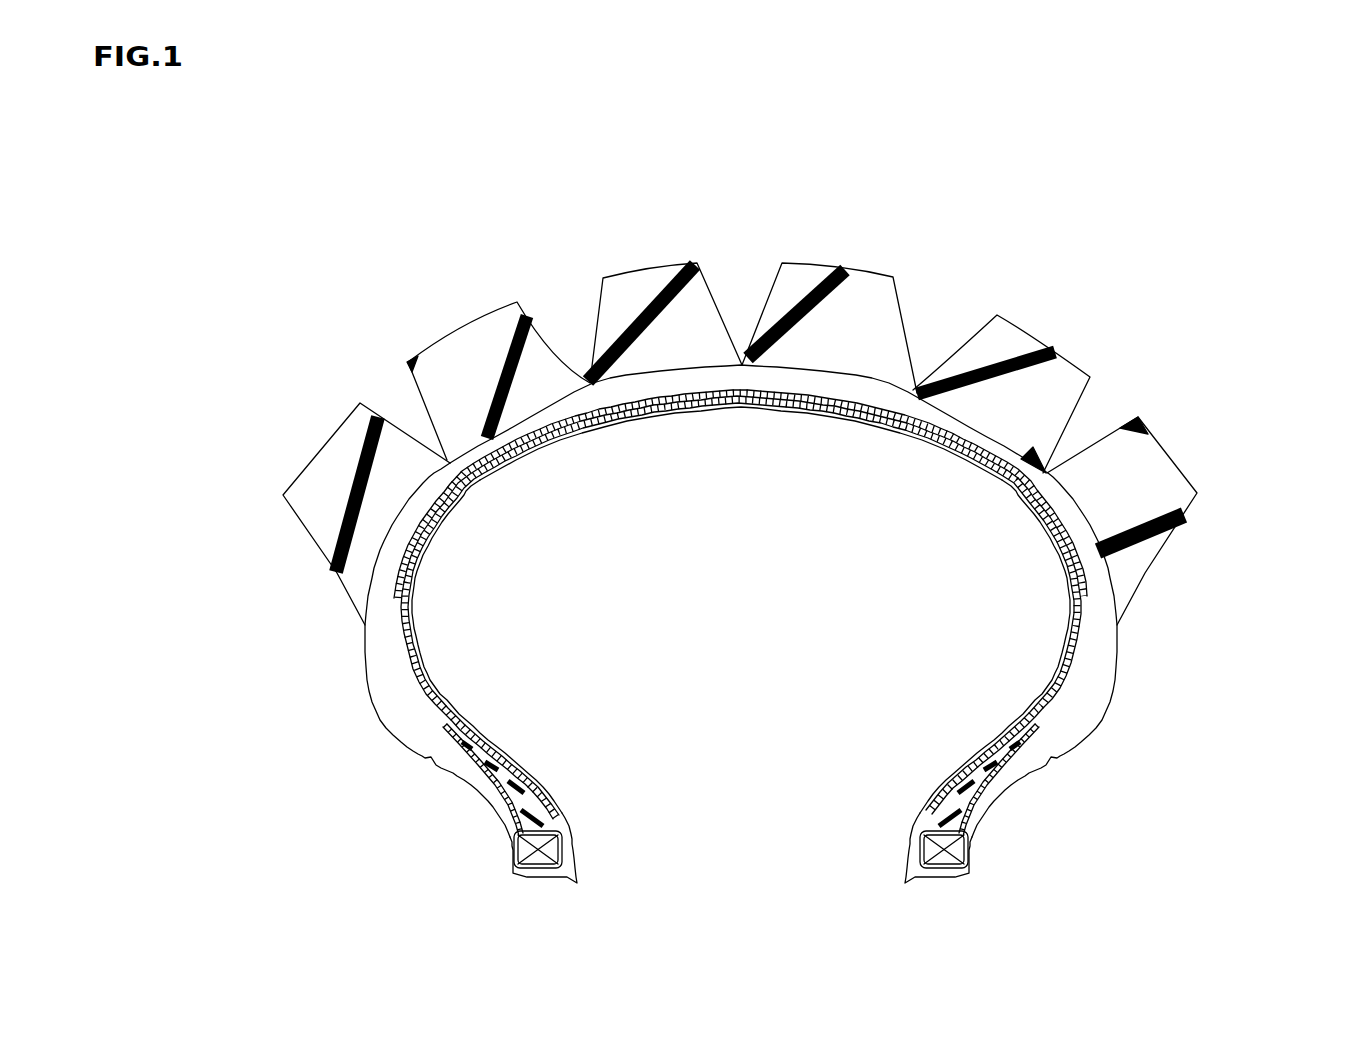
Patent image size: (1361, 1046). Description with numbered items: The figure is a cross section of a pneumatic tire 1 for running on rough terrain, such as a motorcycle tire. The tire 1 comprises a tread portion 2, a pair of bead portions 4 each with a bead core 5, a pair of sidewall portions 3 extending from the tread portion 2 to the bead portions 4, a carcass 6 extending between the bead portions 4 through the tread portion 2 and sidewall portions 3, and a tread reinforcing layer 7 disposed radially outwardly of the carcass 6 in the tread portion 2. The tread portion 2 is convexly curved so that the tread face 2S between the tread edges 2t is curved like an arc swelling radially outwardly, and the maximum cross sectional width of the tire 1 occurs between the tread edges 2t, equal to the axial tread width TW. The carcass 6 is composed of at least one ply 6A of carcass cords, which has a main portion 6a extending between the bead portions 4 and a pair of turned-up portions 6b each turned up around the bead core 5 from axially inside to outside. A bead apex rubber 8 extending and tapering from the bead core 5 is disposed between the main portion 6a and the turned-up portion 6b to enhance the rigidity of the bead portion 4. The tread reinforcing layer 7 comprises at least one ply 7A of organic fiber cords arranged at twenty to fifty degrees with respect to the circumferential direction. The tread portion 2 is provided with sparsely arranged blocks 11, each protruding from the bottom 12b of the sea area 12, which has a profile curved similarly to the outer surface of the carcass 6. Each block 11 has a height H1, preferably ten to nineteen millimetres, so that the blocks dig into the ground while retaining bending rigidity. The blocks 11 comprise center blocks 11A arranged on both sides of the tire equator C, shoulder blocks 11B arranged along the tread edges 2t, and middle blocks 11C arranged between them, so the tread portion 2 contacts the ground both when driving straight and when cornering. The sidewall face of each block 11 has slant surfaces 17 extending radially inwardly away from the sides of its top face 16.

The pneumatic tire 1 is at (730, 508).
The tread portion 2 is at (721, 399).
The tread edge 2t is at (283, 494).
The tread face 2S is at (1000, 443).
The sidewall portion 3 is at (357, 660).
The bead portion 4 is at (741, 848).
The bead core 5 is at (532, 850).
The carcass 6 is at (741, 607).
The carcass ply 6A is at (741, 607).
The main portion 6a is at (1073, 665).
The turned-up portion 6b is at (1063, 712).
The tread reinforcing layer 7 is at (740, 488).
The tread reinforcing ply 7A is at (817, 397).
The bead apex rubber 8 is at (520, 798).
The block 11 is at (721, 399).
The center block 11A is at (641, 268).
The shoulder block 11B is at (744, 499).
The middle block 11C is at (435, 340).
The sea area 12 is at (741, 487).
The bottom of the sea area 12b is at (628, 395).
The top face 16 is at (1013, 352).
The slant surface 17 is at (1003, 322).
The axial tread width TW is at (1197, 493).
The block height H1 is at (602, 278).
The tire equator C is at (741, 432).